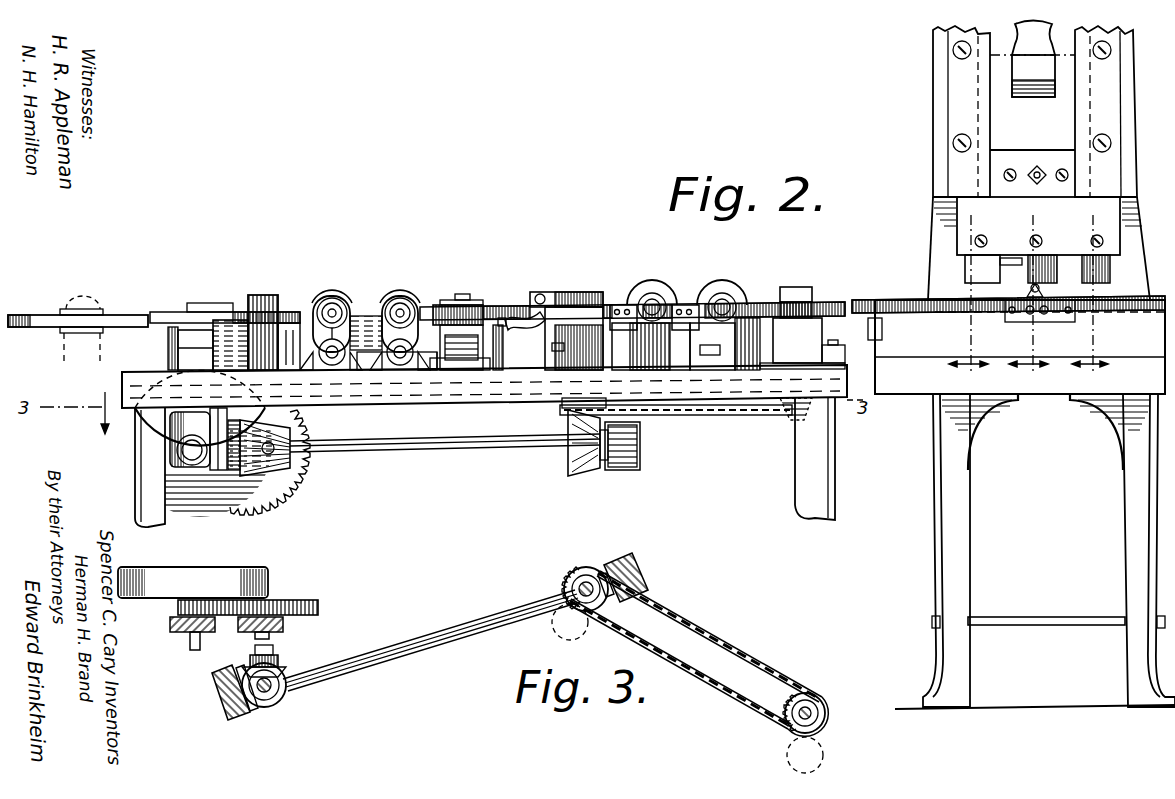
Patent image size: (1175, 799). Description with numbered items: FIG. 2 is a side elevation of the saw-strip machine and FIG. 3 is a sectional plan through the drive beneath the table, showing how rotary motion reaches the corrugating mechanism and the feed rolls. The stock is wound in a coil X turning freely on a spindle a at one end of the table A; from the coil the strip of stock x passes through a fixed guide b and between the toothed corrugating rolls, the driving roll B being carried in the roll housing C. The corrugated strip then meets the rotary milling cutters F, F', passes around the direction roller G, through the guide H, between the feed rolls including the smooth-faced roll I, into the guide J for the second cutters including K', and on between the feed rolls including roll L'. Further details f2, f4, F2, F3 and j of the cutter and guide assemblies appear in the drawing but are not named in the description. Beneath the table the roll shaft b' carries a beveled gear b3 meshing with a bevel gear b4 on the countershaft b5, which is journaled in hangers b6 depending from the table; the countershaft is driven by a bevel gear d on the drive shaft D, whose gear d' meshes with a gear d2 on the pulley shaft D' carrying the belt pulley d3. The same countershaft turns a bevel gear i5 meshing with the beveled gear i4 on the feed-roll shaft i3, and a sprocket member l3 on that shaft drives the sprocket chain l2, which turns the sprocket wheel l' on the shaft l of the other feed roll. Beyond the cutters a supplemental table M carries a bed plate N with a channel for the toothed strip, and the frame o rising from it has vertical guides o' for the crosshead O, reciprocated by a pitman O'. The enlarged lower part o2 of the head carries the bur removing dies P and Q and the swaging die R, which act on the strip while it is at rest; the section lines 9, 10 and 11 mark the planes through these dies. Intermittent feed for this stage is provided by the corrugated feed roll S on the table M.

In FIG. 2, the coil X is at (32, 314).
In FIG. 2, the spindle a is at (92, 306).
In FIG. 2, the strip of stock x is at (495, 306).
In FIG. 2, the fixed guide b is at (170, 348).
In FIG. 2, the toothed corrugating roller B is at (266, 296).
In FIG. 2, the roll housing C is at (280, 325).
In FIG. 2, the rotary milling cutter F is at (331, 318).
In FIG. 2, the rotary milling cutter F' is at (390, 317).
In FIG. 2, the shaft f2 is at (336, 310).
In FIG. 2, the cap f4 is at (312, 300).
In FIG. 2, the base F2 is at (394, 374).
In FIG. 2, the base F3 is at (433, 362).
In FIG. 2, the direction roller G is at (476, 304).
In FIG. 2, the guide H is at (519, 341).
In FIG. 2, the feed roll I is at (568, 296).
In FIG. 2, the rotary milling cutter K' is at (693, 311).
In FIG. 2, the guide J is at (673, 346).
In FIG. 2, the clamp plate j is at (625, 330).
In FIG. 2, the feed roll L' is at (809, 289).
In FIG. 2, the sprocket chain l2 is at (800, 345).
In FIG. 3, the sprocket chain l2 is at (742, 660).
In FIG. 2, the feed roll S is at (876, 322).
In FIG. 2, the table A is at (484, 386).
In FIG. 2, the pulley d3 is at (132, 480).
In FIG. 3, the pulley d3 is at (210, 570).
In FIG. 2, the pulley shaft D' is at (157, 467).
In FIG. 3, the pulley shaft D' is at (170, 643).
In FIG. 2, the hangers b6 is at (225, 428).
In FIG. 3, the hangers b6 is at (222, 712).
In FIG. 2, the beveled gear b3 is at (290, 445).
In FIG. 3, the beveled gear b3 is at (280, 685).
In FIG. 2, the vertical shaft b' is at (289, 461).
In FIG. 3, the vertical shaft b' is at (289, 686).
In FIG. 2, the countershaft b5 is at (450, 450).
In FIG. 3, the countershaft b5 is at (425, 640).
In FIG. 2, the beveled gear i4 is at (580, 445).
In FIG. 3, the beveled gear i4 is at (588, 582).
In FIG. 2, the bevel gear i5 is at (604, 462).
In FIG. 3, the bevel gear i5 is at (608, 572).
In FIG. 2, the sprocket member l3 is at (565, 412).
In FIG. 3, the sprocket member l3 is at (565, 590).
In FIG. 2, the sprocket wheel l' is at (801, 458).
In FIG. 3, the sprocket wheel l' is at (816, 733).
In FIG. 3, the shaft l is at (812, 695).
In FIG. 2, the bed plate N is at (1035, 453).
In FIG. 2, the supplemental table M is at (1020, 304).
In FIG. 2, the section line 9 is at (970, 298).
In FIG. 2, the section line 10 is at (1032, 297).
In FIG. 2, the section line 11 is at (1094, 296).
In FIG. 2, the vertical guides o' is at (961, 111).
In FIG. 2, the frame o is at (1023, 118).
In FIG. 2, the crosshead O is at (1032, 119).
In FIG. 2, the pitman O' is at (1022, 32).
In FIG. 2, the enlarged lower part of head o2 is at (962, 232).
In FIG. 2, the swaging die R is at (978, 266).
In FIG. 2, the bur removing die P is at (1052, 265).
In FIG. 2, the bur removing die Q is at (1098, 262).
In FIG. 3, the gear d' is at (248, 589).
In FIG. 3, the gear d2 is at (178, 607).
In FIG. 3, the drive shaft D is at (239, 643).
In FIG. 3, the bevel gear d is at (273, 650).
In FIG. 3, the bevel gear b4 is at (248, 712).
In FIG. 3, the shaft i3 is at (575, 578).